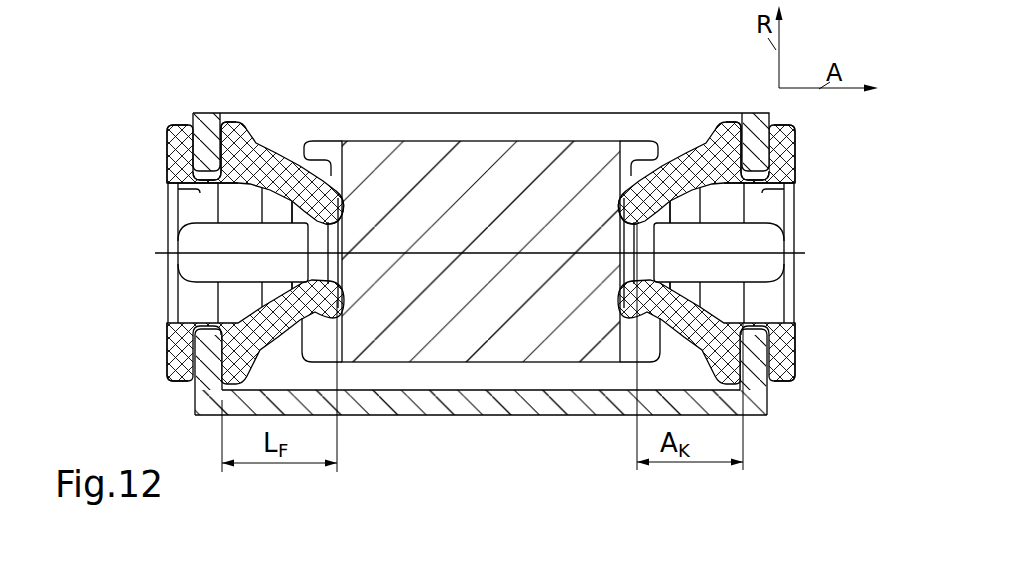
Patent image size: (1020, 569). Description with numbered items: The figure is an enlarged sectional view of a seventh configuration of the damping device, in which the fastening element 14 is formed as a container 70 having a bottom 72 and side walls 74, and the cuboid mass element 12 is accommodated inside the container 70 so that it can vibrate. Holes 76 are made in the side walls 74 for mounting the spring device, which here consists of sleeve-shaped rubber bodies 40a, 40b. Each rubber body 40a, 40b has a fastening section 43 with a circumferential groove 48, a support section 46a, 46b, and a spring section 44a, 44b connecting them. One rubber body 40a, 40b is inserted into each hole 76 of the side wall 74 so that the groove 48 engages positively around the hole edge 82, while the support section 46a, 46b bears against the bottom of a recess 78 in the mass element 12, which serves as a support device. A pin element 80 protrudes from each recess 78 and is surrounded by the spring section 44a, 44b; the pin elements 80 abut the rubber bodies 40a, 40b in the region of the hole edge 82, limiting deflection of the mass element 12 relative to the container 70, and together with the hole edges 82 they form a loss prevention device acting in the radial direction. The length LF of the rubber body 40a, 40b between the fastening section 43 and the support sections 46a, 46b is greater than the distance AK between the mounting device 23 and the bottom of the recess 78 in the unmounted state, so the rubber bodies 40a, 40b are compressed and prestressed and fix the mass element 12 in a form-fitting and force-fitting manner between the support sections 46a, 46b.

The mass element 12 is at (487, 155).
The fastening element 14 is at (690, 420).
The mounting device 23 is at (173, 140).
The rubber body 40a is at (690, 150).
The rubber body 40b is at (268, 150).
The fastening section 43 is at (172, 318).
The spring section 44a is at (667, 150).
The spring section 44b is at (243, 150).
The support section 46a is at (623, 150).
The support section 46b is at (338, 150).
The circumferential groove 48 is at (165, 183).
The container 70 is at (421, 422).
The bottom 72 is at (548, 405).
The side wall 74 is at (208, 130).
The hole 76 is at (200, 202).
The recess 78 is at (283, 296).
The pin element 80 is at (200, 243).
The hole edge 82 is at (167, 377).